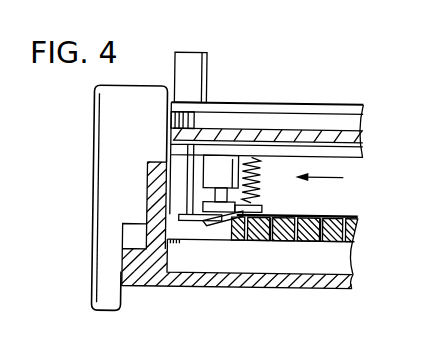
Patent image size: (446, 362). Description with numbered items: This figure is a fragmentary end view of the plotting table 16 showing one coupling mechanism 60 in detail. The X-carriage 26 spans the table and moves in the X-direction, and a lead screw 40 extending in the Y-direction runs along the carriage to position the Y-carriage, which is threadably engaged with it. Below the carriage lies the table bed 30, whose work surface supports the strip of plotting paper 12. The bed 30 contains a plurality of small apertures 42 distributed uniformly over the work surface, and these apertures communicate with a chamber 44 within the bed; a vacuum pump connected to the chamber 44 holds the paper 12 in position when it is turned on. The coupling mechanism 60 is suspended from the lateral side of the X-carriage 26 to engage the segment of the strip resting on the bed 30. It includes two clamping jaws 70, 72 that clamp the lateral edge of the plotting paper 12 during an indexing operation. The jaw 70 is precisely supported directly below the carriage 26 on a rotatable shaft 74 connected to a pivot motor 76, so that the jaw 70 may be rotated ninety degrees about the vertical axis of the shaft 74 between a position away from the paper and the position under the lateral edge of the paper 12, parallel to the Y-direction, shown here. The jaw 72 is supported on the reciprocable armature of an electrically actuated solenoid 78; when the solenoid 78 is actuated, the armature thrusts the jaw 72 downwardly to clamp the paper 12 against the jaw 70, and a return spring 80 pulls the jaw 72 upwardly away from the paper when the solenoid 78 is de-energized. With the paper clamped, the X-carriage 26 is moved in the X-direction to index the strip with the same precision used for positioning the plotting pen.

The plotting paper 12 is at (298, 215).
The plotting table 16 is at (195, 296).
The X-carriage 26 is at (273, 106).
The table bed 30 is at (357, 231).
The lead screw 40 is at (351, 131).
The apertures 42 is at (318, 243).
The chamber 44 is at (307, 269).
The coupling mechanism 60 is at (333, 178).
The clamping jaw 70 is at (191, 222).
The clamping jaw 72 is at (209, 212).
The rotatable shaft 74 is at (166, 158).
The pivot motor 76 is at (205, 82).
The solenoid 78 is at (238, 166).
The return spring 80 is at (257, 191).